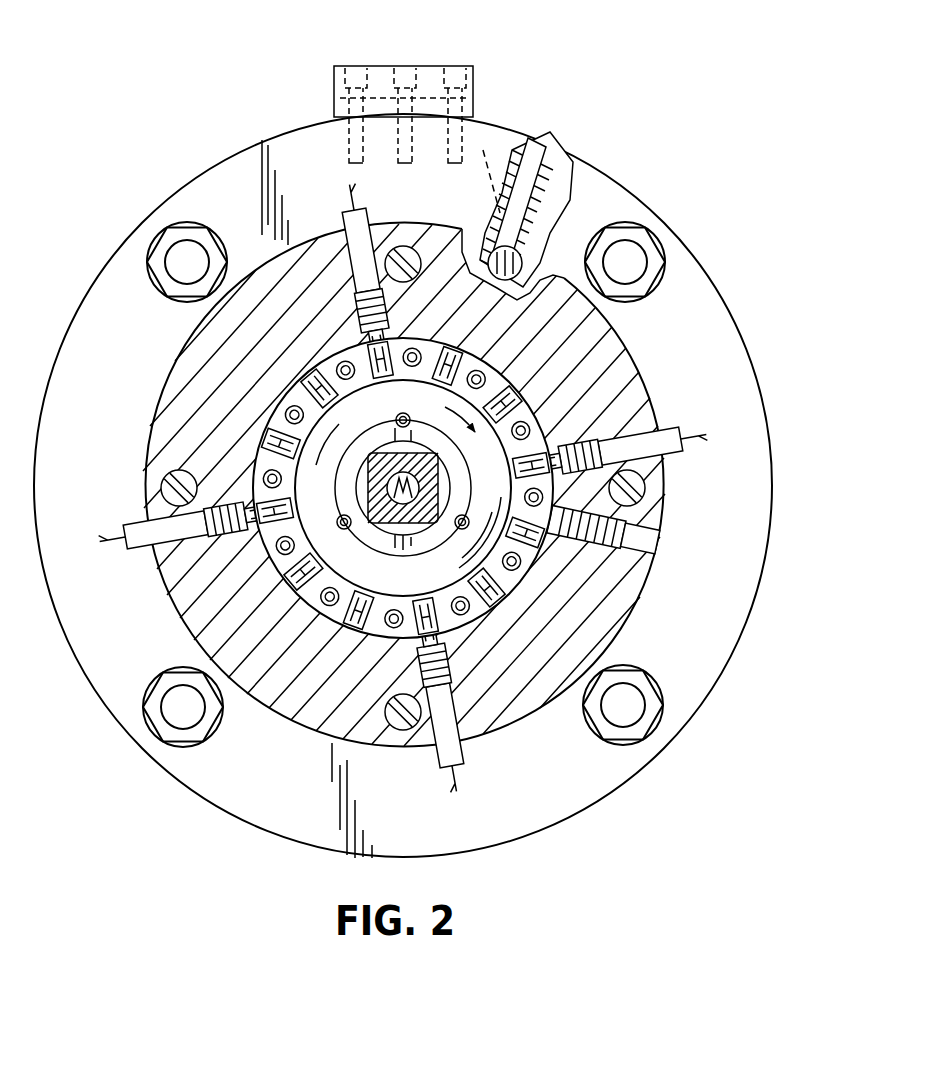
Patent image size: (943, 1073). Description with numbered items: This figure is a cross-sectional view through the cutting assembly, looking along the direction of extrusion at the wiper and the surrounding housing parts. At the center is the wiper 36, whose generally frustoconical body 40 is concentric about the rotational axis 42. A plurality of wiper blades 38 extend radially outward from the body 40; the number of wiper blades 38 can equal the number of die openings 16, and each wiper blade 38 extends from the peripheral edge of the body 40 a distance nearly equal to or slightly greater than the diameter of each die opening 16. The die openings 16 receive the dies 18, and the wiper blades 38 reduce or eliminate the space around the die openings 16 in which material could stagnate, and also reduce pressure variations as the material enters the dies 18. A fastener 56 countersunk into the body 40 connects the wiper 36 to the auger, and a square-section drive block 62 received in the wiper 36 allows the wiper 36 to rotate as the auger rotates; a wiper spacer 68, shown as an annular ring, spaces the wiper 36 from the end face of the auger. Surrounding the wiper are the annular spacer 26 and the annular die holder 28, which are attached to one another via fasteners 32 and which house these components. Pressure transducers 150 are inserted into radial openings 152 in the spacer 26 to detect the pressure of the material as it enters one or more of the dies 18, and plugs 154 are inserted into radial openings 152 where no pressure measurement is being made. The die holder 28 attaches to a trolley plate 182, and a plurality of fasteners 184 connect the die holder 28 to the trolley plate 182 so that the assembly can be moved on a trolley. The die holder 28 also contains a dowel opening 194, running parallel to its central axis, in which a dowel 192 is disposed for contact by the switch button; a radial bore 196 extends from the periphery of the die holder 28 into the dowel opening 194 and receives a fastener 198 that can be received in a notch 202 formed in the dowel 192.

The die openings 16 is at (483, 368).
The dies 18 is at (343, 348).
The annular spacer 26 is at (175, 613).
The annular die holder 28 is at (740, 605).
The fasteners 32 is at (410, 240).
The wiper 36 is at (295, 388).
The wiper blades 38 is at (300, 583).
The body 40 is at (417, 383).
The rotational axis 42 is at (428, 472).
The fastener 56 is at (405, 500).
The drive block 62 is at (423, 513).
The wiper spacer 68 is at (345, 473).
The pressure transducers 150 is at (343, 222).
The radial openings 152 is at (368, 227).
The plugs 154 is at (607, 540).
The trolley plate 182 is at (427, 72).
The fasteners 184 is at (337, 93).
The dowel 192 is at (522, 266).
The dowel opening 194 is at (523, 297).
The radial bore 196 is at (540, 188).
The fastener 198 is at (558, 152).
The notch 202 is at (487, 167).